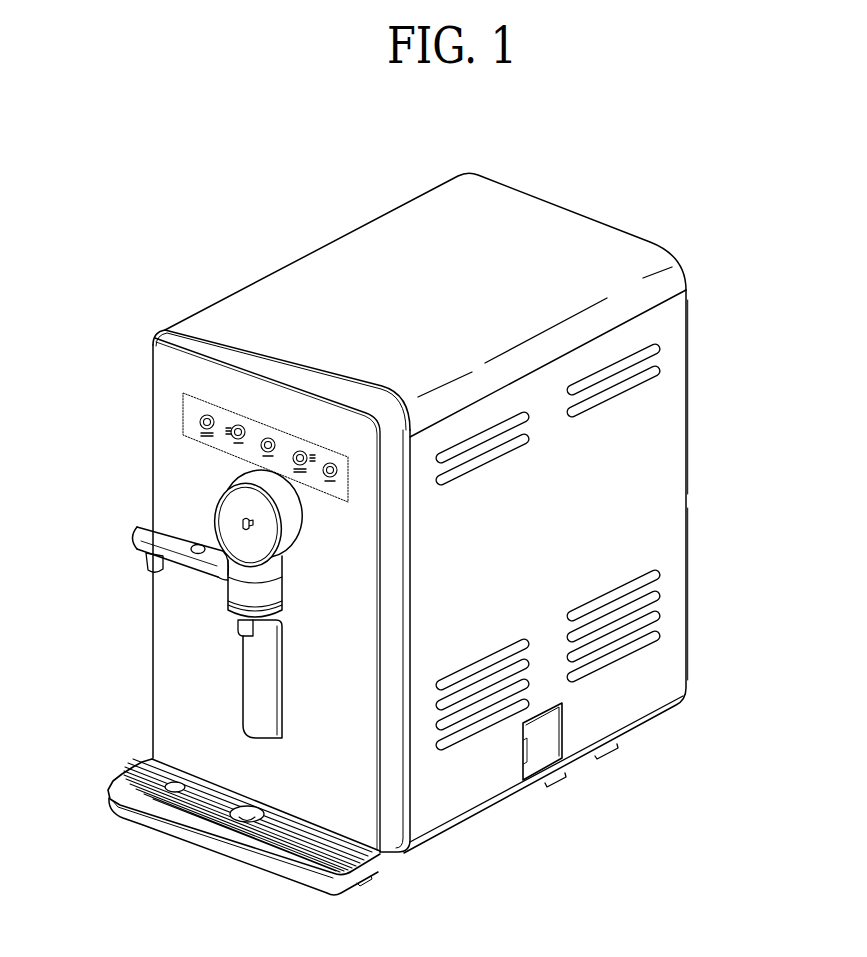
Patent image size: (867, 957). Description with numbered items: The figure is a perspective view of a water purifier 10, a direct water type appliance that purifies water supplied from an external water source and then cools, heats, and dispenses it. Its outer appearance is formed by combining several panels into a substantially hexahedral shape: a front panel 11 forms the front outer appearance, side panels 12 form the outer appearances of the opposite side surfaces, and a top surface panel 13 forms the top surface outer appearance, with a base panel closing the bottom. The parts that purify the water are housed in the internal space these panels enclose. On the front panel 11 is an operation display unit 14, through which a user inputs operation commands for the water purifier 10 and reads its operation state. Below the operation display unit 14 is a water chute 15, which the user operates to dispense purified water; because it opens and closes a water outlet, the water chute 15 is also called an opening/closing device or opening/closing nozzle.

The water purifier 10 is at (424, 502).
The front panel 11 is at (160, 480).
The side panels 12 is at (673, 473).
The top surface panel 13 is at (370, 235).
The operation display unit 14 is at (183, 412).
The water chute 15 is at (206, 607).